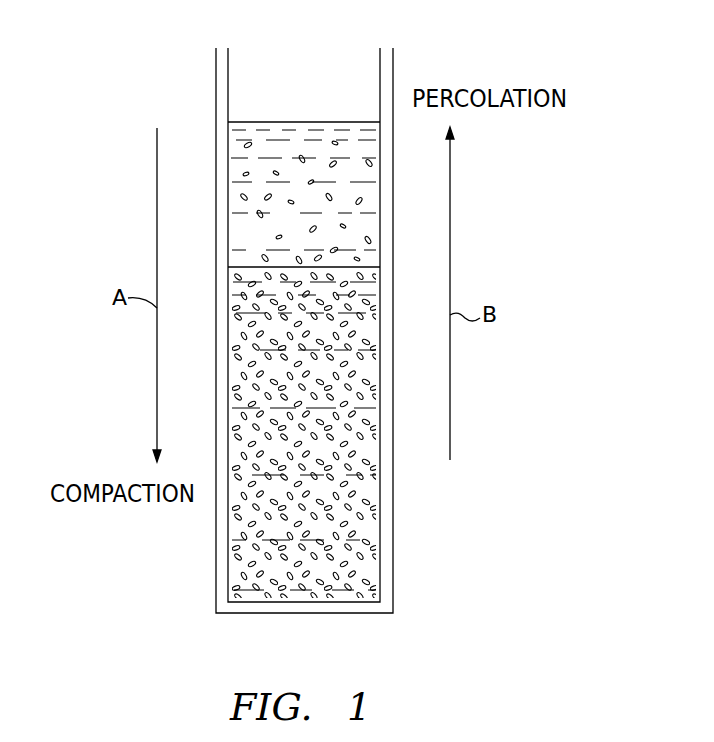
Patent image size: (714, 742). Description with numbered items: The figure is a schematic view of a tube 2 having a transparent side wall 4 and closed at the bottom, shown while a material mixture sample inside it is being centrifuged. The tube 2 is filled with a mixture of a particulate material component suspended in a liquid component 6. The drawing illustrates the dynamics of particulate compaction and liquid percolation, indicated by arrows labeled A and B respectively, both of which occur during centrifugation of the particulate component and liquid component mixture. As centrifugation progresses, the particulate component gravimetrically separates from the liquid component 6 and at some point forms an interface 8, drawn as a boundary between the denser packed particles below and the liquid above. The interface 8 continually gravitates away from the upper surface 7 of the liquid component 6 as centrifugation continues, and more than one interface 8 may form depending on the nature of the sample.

The tube 2 is at (427, 576).
The transparent side wall 4 is at (393, 490).
The liquid component 6 is at (297, 143).
The upper surface 7 is at (355, 122).
The interface 8 is at (257, 262).